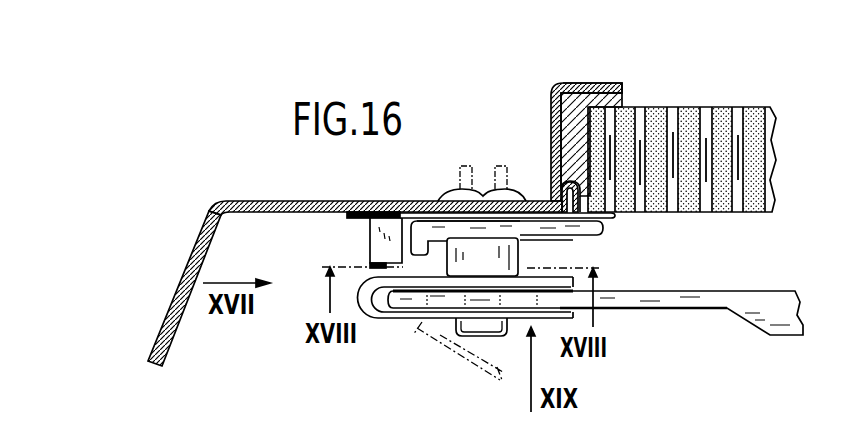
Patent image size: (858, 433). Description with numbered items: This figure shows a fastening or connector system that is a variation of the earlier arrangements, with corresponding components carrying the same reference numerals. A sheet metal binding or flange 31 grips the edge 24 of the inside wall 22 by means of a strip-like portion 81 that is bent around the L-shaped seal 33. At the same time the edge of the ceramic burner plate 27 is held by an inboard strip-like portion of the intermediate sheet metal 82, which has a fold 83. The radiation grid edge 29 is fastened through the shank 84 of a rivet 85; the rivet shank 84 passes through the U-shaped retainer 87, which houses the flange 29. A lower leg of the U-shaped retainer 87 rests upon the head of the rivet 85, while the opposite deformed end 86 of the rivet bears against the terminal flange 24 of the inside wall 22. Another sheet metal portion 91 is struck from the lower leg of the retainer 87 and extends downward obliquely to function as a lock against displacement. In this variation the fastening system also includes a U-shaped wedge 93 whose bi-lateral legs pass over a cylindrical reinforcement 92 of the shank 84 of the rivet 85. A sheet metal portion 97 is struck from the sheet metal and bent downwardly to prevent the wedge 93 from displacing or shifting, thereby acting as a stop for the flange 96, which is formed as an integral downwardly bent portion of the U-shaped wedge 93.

The inside wall 22 is at (186, 266).
The edge of the inside wall 24 is at (285, 201).
The ceramic burner plate 27 is at (720, 96).
The radiation grid edge 29 is at (707, 308).
The sheet metal binding or flange 31 is at (553, 122).
The L-shaped seal 33 is at (573, 97).
The strip-like portion 81 is at (597, 83).
The intermediate sheet metal 82 is at (536, 206).
The fold 83 is at (581, 196).
The shank 84 is at (433, 310).
The rivet 85 is at (473, 302).
The deformed end 86 is at (452, 194).
The U-shaped retainer 87 is at (375, 318).
The sheet metal portion 91 is at (508, 340).
The cylindrical reinforcement 92 is at (518, 251).
The U-shaped wedge 93 is at (590, 241).
The flange 96 is at (384, 212).
The sheet metal portion 97 is at (373, 240).